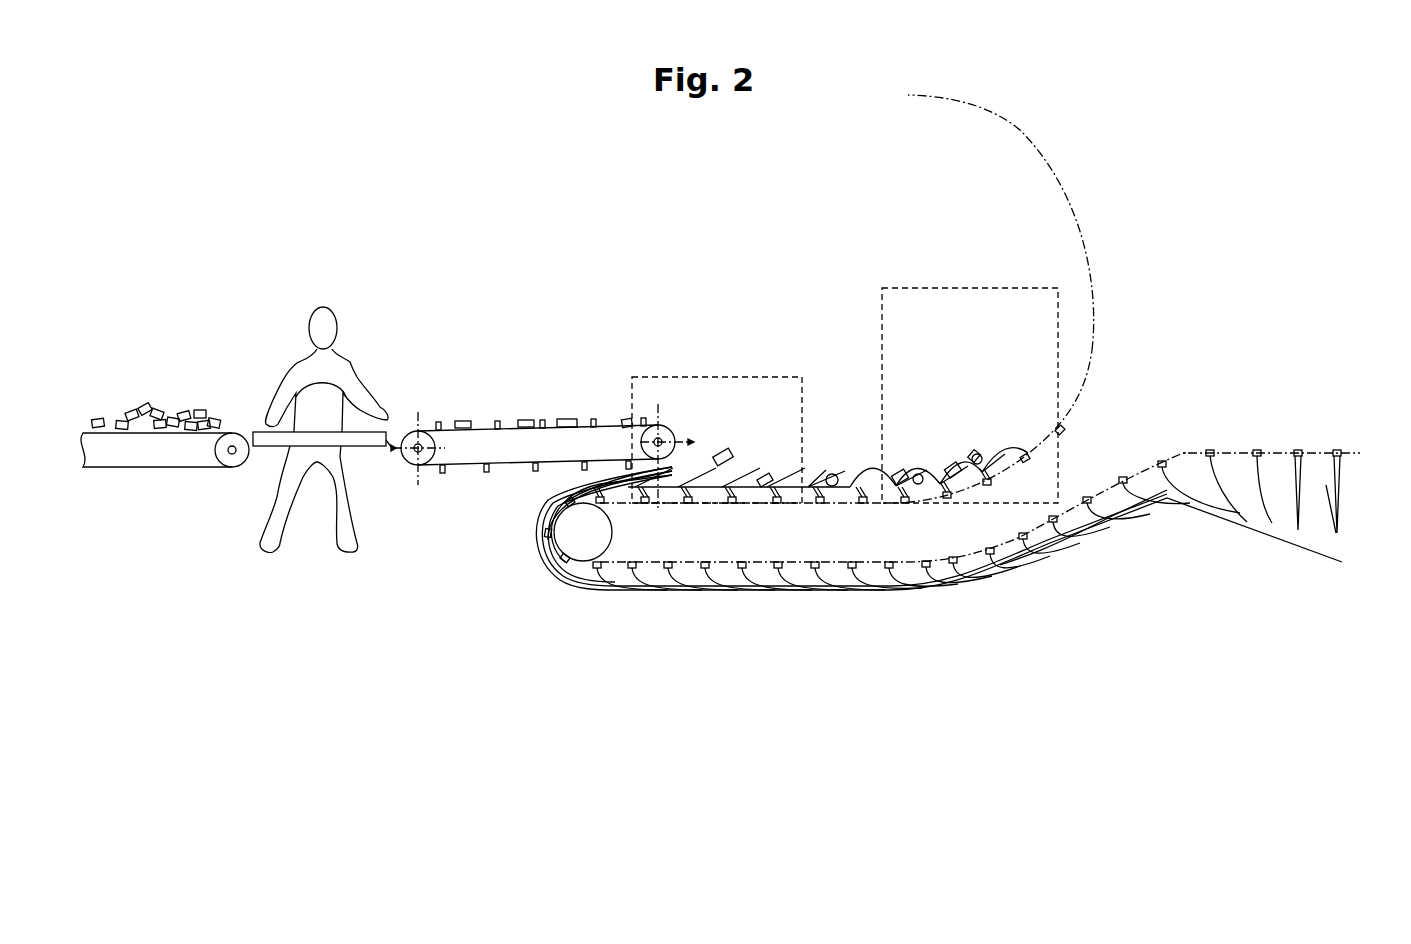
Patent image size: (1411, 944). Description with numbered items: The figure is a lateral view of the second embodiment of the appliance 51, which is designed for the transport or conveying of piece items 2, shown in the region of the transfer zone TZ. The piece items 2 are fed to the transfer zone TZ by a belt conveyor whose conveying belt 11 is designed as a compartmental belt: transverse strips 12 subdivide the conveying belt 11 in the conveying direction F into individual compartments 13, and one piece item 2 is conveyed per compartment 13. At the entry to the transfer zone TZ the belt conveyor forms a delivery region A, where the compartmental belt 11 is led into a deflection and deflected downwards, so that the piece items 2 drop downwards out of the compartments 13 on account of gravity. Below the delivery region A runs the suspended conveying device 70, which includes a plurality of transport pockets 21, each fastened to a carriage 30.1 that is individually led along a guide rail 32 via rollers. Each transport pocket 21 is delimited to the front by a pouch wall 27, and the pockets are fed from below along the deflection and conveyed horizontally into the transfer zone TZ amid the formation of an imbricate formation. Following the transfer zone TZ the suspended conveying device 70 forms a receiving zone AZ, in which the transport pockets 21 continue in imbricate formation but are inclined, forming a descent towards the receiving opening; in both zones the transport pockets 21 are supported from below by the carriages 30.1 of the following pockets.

The piece item 2 is at (623, 421).
The conveying belt 11 is at (508, 465).
The transverse strips 12 is at (438, 422).
The compartment 13 is at (508, 420).
The transport pocket 21 is at (1345, 505).
The pouch wall 27 is at (790, 472).
The carriage 30.1 is at (1211, 453).
The guide rail 32 is at (1186, 452).
The appliance 51 is at (851, 307).
The suspended conveying device 70 is at (1096, 332).
The delivery region A is at (683, 435).
The conveying direction F is at (568, 400).
The transfer zone TZ is at (785, 377).
The receiving zone AZ is at (998, 288).